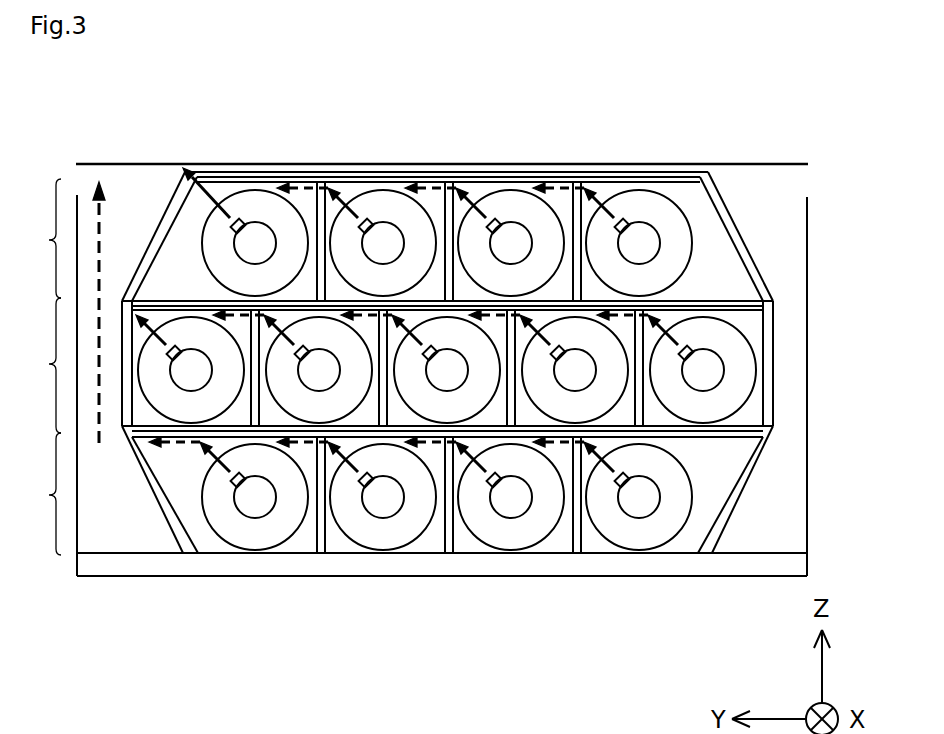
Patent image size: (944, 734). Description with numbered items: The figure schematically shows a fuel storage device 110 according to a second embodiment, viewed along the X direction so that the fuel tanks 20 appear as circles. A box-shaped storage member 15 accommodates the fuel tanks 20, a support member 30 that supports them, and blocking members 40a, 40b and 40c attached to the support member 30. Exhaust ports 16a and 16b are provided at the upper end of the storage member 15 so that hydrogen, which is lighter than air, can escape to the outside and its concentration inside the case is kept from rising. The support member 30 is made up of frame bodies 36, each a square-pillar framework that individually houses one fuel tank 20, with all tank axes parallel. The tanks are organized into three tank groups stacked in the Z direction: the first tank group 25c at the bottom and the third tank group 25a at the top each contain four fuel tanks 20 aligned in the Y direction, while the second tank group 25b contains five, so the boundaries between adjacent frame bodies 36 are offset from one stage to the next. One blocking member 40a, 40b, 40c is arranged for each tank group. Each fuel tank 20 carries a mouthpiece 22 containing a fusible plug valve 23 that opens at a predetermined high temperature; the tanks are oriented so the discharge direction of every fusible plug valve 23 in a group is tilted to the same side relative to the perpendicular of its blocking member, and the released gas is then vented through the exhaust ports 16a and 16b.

The fuel storage device 110 is at (740, 112).
The storage member 15 is at (807, 297).
The exhaust port 16a is at (78, 175).
The exhaust port 16b is at (808, 178).
The fuel tank 20 is at (640, 218).
The mouthpiece 22 is at (708, 381).
The fusible plug valve 23 is at (697, 351).
The third tank group 25a is at (33, 238).
The second tank group 25b is at (33, 365).
The first tank group 25c is at (33, 494).
The support member 30 is at (660, 172).
The frame body 36 is at (757, 260).
The blocking member 40a is at (682, 190).
The blocking member 40b is at (752, 313).
The blocking member 40c is at (687, 440).